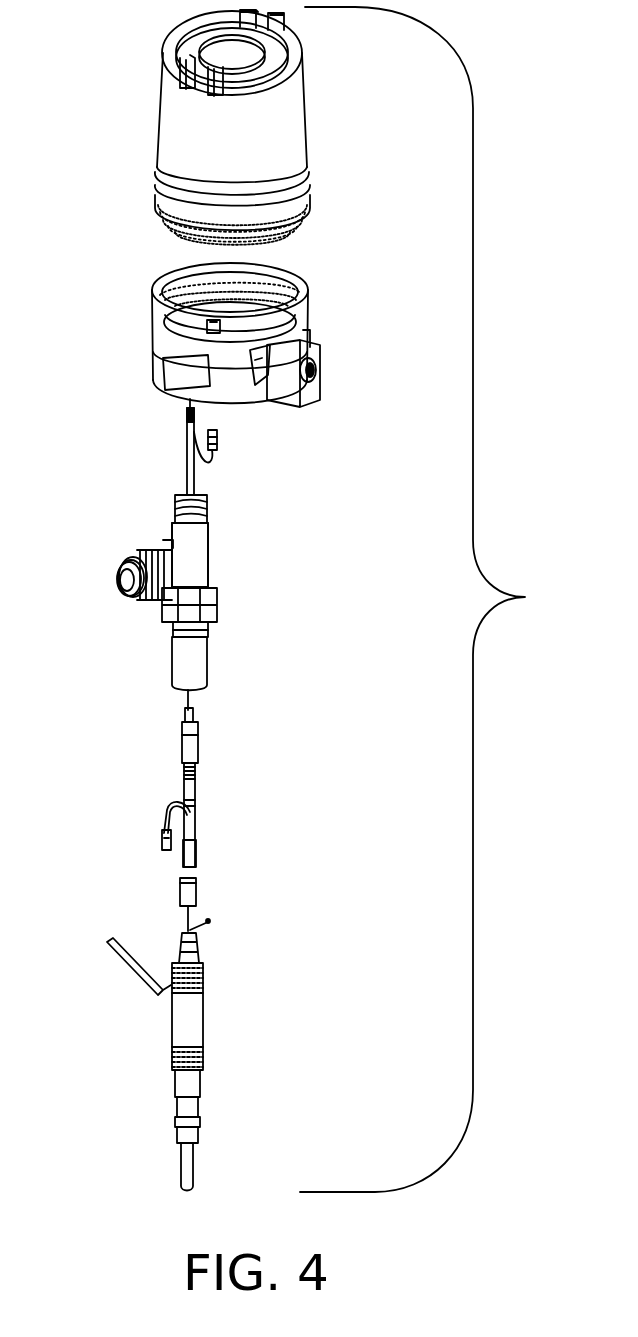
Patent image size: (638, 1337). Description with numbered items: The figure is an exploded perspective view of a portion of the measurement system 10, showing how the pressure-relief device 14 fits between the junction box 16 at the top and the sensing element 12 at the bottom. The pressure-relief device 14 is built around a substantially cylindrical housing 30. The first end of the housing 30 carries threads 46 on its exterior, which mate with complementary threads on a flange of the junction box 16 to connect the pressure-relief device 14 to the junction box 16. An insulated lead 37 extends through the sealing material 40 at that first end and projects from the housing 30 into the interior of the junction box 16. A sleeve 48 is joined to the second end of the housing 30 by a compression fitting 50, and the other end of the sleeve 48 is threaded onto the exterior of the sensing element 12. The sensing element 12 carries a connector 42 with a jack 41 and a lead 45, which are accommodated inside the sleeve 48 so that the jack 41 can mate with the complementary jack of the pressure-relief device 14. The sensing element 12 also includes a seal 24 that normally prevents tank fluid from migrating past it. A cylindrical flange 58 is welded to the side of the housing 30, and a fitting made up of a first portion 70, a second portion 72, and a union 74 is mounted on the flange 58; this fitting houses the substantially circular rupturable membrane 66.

The measurement system 10 is at (525, 597).
The sensing element 12 is at (212, 1020).
The pressure-relief device 14 is at (229, 516).
The junction box 16 is at (309, 139).
The seal 24 is at (168, 1092).
The housing 30 is at (212, 573).
The insulated lead 37 is at (185, 443).
The sealing material 40 is at (178, 493).
The jack 41 is at (198, 718).
The connector 42 is at (172, 730).
The lead 45 is at (195, 818).
The threads 46 is at (175, 511).
The sleeve 48 is at (210, 657).
The compression fitting 50 is at (220, 605).
The cylindrical flange 58 is at (189, 556).
The membrane 66 is at (118, 588).
The first portion 70 is at (168, 552).
The second portion 72 is at (133, 604).
The union 74 is at (123, 556).